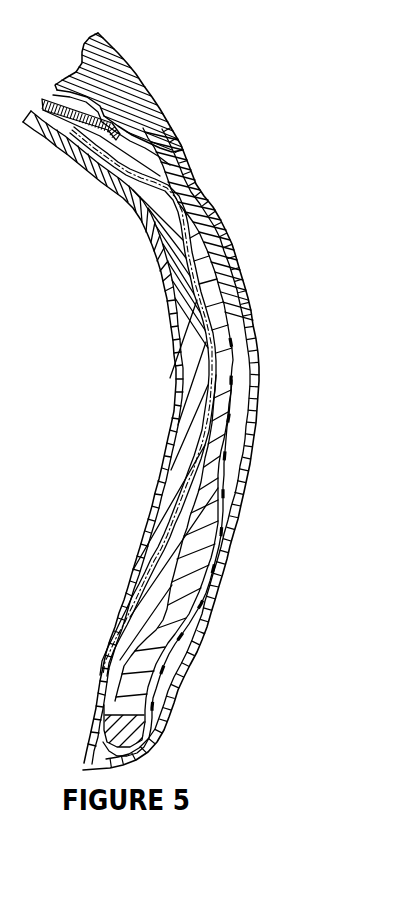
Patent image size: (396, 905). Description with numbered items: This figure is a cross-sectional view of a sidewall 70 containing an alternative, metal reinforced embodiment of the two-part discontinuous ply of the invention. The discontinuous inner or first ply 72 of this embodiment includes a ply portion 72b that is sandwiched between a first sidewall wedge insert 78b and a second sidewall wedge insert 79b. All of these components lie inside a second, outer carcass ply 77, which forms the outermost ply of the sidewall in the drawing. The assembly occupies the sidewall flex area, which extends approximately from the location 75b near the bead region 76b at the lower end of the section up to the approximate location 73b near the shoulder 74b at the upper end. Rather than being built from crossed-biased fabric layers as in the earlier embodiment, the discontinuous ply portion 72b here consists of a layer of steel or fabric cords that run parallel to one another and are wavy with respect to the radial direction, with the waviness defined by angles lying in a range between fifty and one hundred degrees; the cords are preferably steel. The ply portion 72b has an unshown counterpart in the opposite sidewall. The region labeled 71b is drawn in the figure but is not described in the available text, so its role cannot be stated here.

The sidewall 70 is at (268, 222).
The retention channel 71b is at (170, 615).
The discontinuous inner or first ply 72 is at (190, 272).
The ply portion 72b is at (208, 315).
The location near the shoulder 73b is at (63, 148).
The shoulder 74b is at (168, 118).
The location near the bead region 75b is at (122, 625).
The bead region 76b is at (200, 647).
The second, outer carcass ply 77 is at (235, 298).
The first sidewall wedge insert 78b is at (187, 388).
The second sidewall wedge insert 79b is at (220, 410).